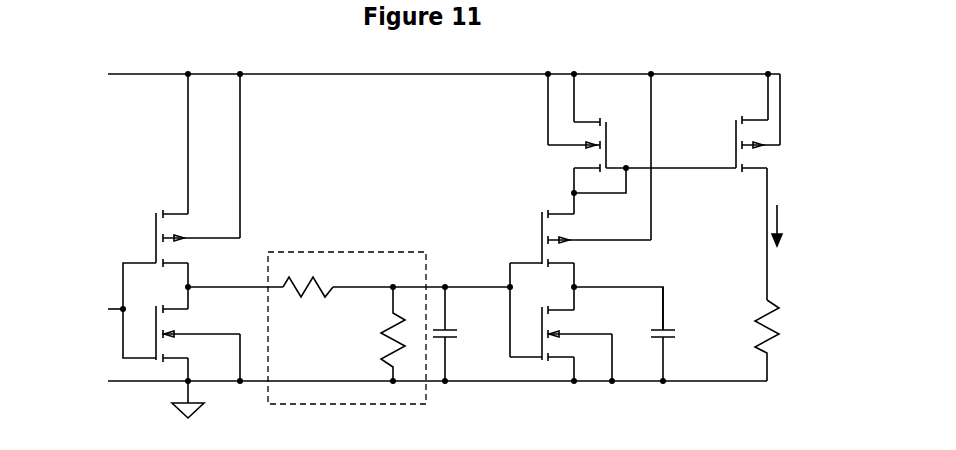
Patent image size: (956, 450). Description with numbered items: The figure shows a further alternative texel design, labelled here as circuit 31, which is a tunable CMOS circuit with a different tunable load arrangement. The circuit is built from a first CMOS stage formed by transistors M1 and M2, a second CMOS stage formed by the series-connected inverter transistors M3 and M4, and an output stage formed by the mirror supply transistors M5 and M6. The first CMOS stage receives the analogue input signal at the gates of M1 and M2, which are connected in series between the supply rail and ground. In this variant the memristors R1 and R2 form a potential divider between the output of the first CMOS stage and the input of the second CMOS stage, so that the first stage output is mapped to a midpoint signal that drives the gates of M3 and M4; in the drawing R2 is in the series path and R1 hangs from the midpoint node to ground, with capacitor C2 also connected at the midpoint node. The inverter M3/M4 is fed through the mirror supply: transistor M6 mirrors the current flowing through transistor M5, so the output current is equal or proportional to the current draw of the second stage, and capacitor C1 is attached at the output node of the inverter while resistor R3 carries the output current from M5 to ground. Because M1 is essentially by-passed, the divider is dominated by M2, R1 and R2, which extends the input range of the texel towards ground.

The amplifier circuit 31 is at (112, 152).
The transistor M1 is at (198, 333).
The transistor M2 is at (198, 238).
The n-MOS transistor M3 is at (596, 238).
The p-MOS transistor M4 is at (577, 333).
The mirror supply transistor M5 is at (775, 144).
The mirror supply transistor M6 is at (561, 145).
The memristor R1 is at (378, 334).
The memristor R2 is at (308, 277).
The resistor R3 is at (753, 340).
The capacitor C1 is at (673, 334).
The capacitor C2 is at (456, 334).